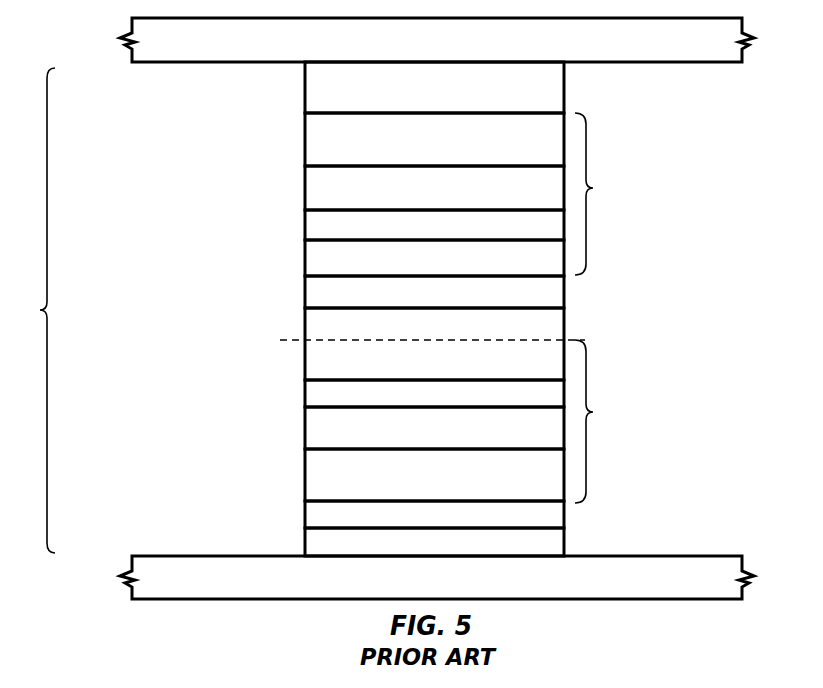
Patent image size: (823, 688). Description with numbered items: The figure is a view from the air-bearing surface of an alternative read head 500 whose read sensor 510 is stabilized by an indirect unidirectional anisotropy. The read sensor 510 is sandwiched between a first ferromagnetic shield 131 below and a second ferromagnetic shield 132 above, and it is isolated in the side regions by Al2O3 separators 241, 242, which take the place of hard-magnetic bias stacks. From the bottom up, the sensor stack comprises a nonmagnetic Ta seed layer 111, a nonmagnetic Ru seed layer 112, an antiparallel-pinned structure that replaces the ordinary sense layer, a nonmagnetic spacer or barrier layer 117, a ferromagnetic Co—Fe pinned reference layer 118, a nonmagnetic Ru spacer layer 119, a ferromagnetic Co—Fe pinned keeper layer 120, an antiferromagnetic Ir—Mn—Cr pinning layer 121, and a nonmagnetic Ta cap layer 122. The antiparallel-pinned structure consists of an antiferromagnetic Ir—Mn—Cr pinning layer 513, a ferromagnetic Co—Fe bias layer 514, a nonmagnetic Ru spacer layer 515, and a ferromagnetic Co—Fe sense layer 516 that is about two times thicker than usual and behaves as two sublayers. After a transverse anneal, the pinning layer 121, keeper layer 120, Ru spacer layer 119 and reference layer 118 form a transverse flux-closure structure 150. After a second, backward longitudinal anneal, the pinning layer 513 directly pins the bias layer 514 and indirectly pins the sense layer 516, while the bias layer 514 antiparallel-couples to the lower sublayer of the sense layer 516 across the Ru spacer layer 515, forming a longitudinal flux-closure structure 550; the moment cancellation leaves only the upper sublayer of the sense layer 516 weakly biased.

The read head 500 is at (182, 617).
The read sensor 510 is at (34, 310).
The second ferromagnetic shield 132 is at (567, 48).
The first ferromagnetic shield 131 is at (567, 586).
The nonmagnetic Ta cap layer 122 is at (531, 99).
The antiferromagnetic Ir—Mn—Cr pinning layer 121 is at (531, 155).
The ferromagnetic Co—Fe pinned keeper layer 120 is at (531, 200).
The nonmagnetic Ru spacer layer 119 is at (531, 236).
The ferromagnetic Co—Fe pinned reference layer 118 is at (531, 268).
The nonmagnetic spacer or barrier layer 117 is at (531, 302).
The ferromagnetic Co—Fe sense layer 516 is at (531, 335).
The nonmagnetic Ru spacer layer 515 is at (531, 405).
The ferromagnetic Co—Fe bias layer 514 is at (531, 438).
The antiferromagnetic Ir—Mn—Cr pinning layer 513 is at (531, 485).
The nonmagnetic Ru seed layer 112 is at (531, 526).
The nonmagnetic Ta seed layer 111 is at (531, 552).
The transverse flux-closure structure 150 is at (664, 228).
The longitudinal flux-closure structure 550 is at (664, 451).
The Al2O3 separator 241 is at (217, 540).
The Al2O3 separator 242 is at (702, 545).